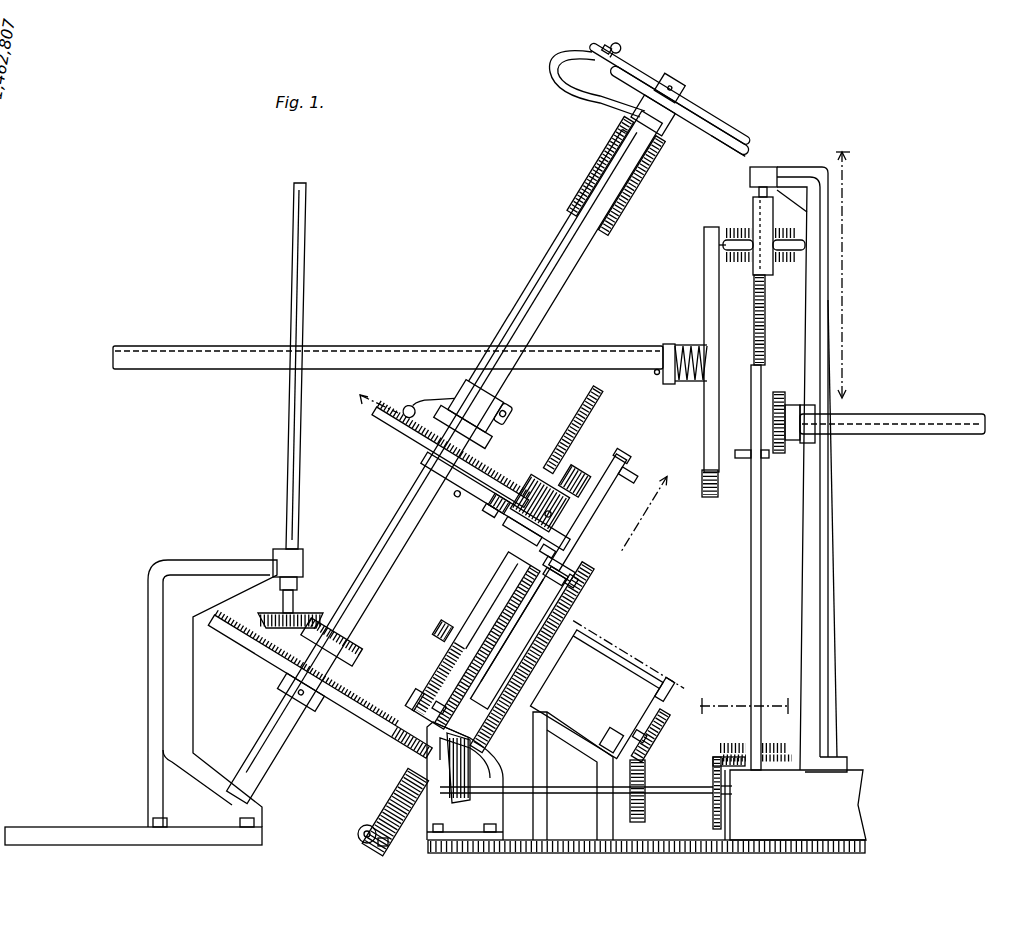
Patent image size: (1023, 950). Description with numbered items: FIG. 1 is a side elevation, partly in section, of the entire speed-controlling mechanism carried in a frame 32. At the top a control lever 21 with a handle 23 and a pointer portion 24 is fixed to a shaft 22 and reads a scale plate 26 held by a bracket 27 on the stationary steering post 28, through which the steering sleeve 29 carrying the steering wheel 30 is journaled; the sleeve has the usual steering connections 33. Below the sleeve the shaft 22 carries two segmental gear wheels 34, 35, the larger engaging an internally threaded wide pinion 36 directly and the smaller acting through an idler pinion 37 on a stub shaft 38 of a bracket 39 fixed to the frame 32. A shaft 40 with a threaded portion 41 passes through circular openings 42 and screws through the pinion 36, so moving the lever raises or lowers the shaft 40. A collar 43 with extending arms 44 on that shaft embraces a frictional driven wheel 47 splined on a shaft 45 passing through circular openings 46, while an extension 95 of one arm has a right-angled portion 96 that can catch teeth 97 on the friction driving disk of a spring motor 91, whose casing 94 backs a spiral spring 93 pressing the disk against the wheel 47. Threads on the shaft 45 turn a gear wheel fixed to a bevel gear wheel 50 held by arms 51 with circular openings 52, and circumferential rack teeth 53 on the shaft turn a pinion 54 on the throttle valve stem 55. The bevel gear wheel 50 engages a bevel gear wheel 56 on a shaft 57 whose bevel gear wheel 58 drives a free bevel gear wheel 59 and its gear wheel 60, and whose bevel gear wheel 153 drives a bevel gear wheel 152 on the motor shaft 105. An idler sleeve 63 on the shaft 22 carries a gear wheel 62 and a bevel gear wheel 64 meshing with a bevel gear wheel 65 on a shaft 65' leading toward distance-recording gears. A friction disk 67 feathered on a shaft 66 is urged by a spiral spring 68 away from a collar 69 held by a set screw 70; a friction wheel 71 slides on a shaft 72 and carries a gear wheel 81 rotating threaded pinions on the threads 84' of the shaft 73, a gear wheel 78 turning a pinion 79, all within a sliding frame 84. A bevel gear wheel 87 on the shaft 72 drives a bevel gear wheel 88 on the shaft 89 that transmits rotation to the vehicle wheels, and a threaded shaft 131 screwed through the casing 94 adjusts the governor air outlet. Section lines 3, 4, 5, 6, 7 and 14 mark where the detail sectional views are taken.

The section line 3— 3 is at (369, 395).
The section line 4— 4 is at (646, 505).
The section line 5— 5 is at (843, 274).
The section line 6— 6 is at (631, 661).
The section line 7— 7 is at (748, 710).
The section line 14— 14 is at (497, 745).
The control lever 21 is at (650, 75).
The shaft 22 is at (690, 96).
The handle 23 is at (628, 58).
The pointer portion 24 is at (596, 70).
The scale plate 26 is at (745, 140).
The bracket 27 is at (568, 87).
The steering post 28 is at (612, 147).
The steering sleeve 29 is at (548, 237).
The steering wheel 30 is at (707, 143).
The frame 32 is at (843, 480).
The connections 33 is at (505, 400).
The segmental gear wheel 34 is at (378, 415).
The segmental gear wheel 35 is at (420, 455).
The wide pinion 36 is at (533, 480).
The idler pinion 37 is at (497, 505).
The stub shaft 38 is at (510, 517).
The bracket 39 is at (508, 532).
The shaft 40 is at (485, 580).
The threaded portion 41 is at (588, 420).
The circular openings 42 is at (540, 455).
The collar 43 is at (502, 568).
The extending arms 44 is at (575, 535).
The shaft 45 is at (540, 585).
The circular openings 46 is at (590, 560).
The frictional driven wheel 47 is at (600, 572).
The bevel gear wheel 50 is at (420, 742).
The arms 51 is at (430, 742).
The circular openings 52 is at (420, 770).
The circumferential rack teeth 53 is at (385, 805).
The pinion 54 is at (358, 830).
The stem 55 is at (376, 842).
The bevel gear wheel 56 is at (450, 798).
The shaft 57 is at (565, 790).
The bevel gear wheel 58 is at (713, 800).
The bevel gear wheel 59 is at (655, 755).
The gear wheel 60 is at (730, 745).
The gear wheel 62 is at (275, 658).
The sleeve 63 is at (335, 672).
The bevel gear wheel 64 is at (358, 645).
The bevel gear wheel 65 is at (285, 588).
The shaft 65' is at (270, 366).
The shaft 66 is at (352, 345).
The friction disk 67 is at (705, 297).
The spiral spring 68 is at (685, 348).
The collar 69 is at (660, 348).
The set screw 70 is at (656, 375).
The friction wheel 71 is at (790, 245).
The shaft 72 is at (740, 228).
The shaft 73 is at (763, 380).
The gear wheel 78 is at (443, 718).
The pinion 79 is at (430, 730).
The gear wheel 81 is at (800, 258).
The frame 84 is at (820, 200).
The threads 84' is at (777, 320).
The bevel gear wheel 87 is at (744, 458).
The bevel gear wheel 88 is at (790, 400).
The shaft 89 is at (908, 420).
The spring motor 91 is at (596, 694).
The spiral spring 93 is at (500, 752).
The casing 94 is at (620, 652).
The extension 95 is at (620, 527).
The bent portion 96 is at (640, 468).
The teeth 97 is at (565, 630).
The shaft 105 is at (650, 742).
The shaft 131 is at (665, 682).
The bevel gear wheel 152 is at (655, 735).
The bevel gear wheel 153 is at (647, 775).